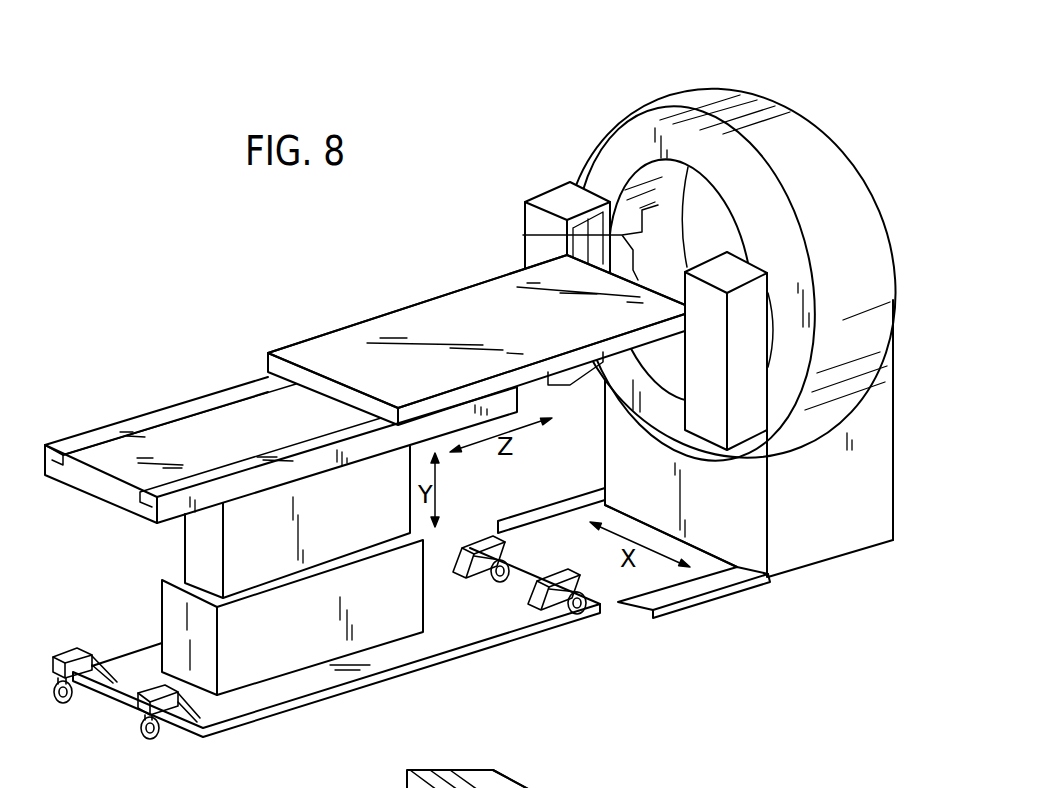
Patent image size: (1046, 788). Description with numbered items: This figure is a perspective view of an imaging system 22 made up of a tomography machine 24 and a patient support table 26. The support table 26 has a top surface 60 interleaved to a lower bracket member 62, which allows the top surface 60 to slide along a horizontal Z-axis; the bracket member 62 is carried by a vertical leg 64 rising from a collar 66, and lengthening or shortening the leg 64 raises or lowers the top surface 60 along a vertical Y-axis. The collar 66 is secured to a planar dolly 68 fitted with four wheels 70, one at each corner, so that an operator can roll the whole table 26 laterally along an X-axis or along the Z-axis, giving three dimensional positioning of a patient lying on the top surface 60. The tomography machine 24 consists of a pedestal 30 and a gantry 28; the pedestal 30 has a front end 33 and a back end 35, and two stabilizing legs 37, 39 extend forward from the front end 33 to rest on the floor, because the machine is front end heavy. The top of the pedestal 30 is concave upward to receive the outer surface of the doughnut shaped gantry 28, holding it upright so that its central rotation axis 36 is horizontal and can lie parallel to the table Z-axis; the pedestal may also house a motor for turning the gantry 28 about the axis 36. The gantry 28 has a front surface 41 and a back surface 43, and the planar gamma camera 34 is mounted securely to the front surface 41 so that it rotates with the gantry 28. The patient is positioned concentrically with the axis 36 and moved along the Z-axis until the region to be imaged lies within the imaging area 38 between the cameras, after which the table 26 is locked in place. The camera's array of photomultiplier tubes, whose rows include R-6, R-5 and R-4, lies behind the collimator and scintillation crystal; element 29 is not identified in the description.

The imaging system 22 is at (320, 295).
The tomography machine 24 is at (747, 106).
The patient support table 26 is at (207, 387).
The gantry 28 is at (813, 187).
The gantry side panel edge 29 is at (893, 410).
The pedestal 30 is at (785, 520).
The front end 33 is at (720, 535).
The planar gamma camera 34 is at (783, 447).
The back end 35 is at (893, 473).
The central gantry rotation axis 36 is at (713, 282).
The stabilizing leg 37 is at (680, 597).
The imaging area 38 is at (527, 235).
The stabilizing leg 39 is at (583, 497).
The front surface 41 is at (790, 245).
The back surface 43 is at (797, 112).
The top surface 60 is at (440, 307).
The lower bracket member 62 is at (97, 438).
The vertical leg 64 is at (242, 542).
The collar 66 is at (203, 647).
The planar dolly 68 is at (465, 625).
The wheels 70 is at (140, 702).
The row of PMTs R-6 is at (495, 778).
The row of PMTs R-5 is at (548, 787).
The row of PMTs R-4 is at (610, 781).